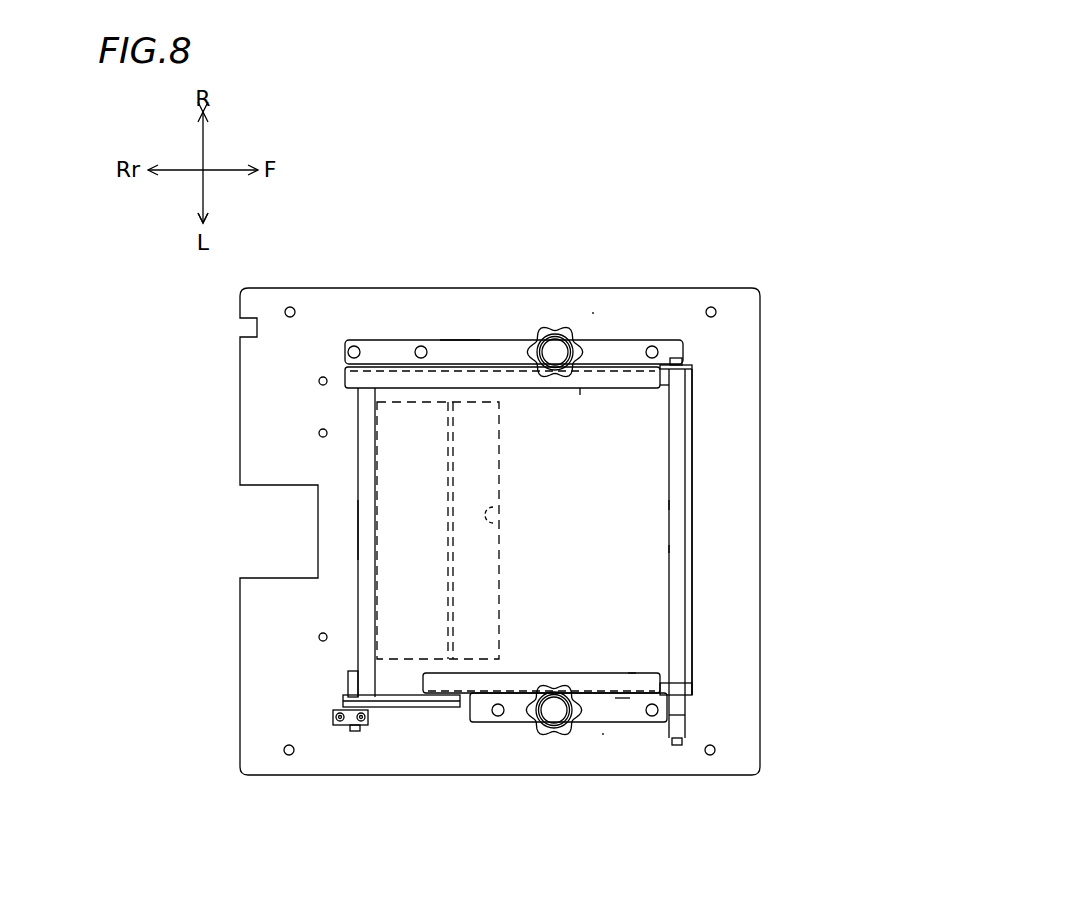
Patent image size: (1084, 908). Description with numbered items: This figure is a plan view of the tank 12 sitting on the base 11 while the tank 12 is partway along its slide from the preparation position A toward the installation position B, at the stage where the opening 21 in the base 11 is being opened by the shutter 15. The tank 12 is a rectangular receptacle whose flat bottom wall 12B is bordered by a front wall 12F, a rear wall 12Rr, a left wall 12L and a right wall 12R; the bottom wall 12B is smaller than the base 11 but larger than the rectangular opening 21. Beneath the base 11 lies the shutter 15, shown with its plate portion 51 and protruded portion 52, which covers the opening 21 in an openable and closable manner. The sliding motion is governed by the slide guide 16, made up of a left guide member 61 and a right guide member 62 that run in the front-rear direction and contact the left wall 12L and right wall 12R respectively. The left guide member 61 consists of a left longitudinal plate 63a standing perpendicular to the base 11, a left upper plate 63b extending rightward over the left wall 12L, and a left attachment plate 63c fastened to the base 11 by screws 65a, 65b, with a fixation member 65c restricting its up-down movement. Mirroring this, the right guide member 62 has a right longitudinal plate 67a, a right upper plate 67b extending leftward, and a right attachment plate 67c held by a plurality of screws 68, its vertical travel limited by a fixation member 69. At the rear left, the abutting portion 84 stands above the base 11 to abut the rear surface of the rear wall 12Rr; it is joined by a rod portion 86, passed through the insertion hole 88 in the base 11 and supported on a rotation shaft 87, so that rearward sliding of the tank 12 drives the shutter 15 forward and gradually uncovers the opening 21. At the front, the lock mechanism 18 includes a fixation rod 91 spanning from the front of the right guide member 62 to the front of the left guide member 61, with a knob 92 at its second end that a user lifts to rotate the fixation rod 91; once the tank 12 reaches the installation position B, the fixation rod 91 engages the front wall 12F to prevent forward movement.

The base 11 is at (637, 303).
The tank 12 is at (702, 527).
The bottom wall 12B is at (647, 472).
The front wall 12F is at (693, 593).
The right wall 12R is at (665, 385).
The rear wall 12Rr is at (358, 530).
The left wall 12L is at (397, 693).
The shutter 15 is at (446, 445).
The slide guide 16 is at (593, 310).
The lock mechanism 18 is at (668, 549).
The opening 21 is at (500, 520).
The plate portion 51 is at (468, 558).
The protruded portion 52 is at (448, 502).
The left guide member 61 is at (632, 666).
The right guide member 62 is at (580, 396).
The left longitudinal plate 63a is at (622, 698).
The left upper plate 63b is at (557, 672).
The left attachment plate 63c is at (583, 723).
The screw 65a is at (652, 718).
The screw 65b is at (490, 716).
The fixation member 65c is at (530, 723).
The right longitudinal plate 67a is at (515, 343).
The right upper plate 67b is at (537, 390).
The right attachment plate 67c is at (461, 340).
The screws 68 is at (354, 345).
The fixation member 69 is at (562, 326).
The abutting portion 84 is at (348, 677).
The rod portion 86 is at (343, 703).
The rotation shaft 87 is at (352, 731).
The insertion hole 88 is at (443, 707).
The fixation rod 91 is at (672, 505).
The knob 92 is at (680, 717).
The preparation position A is at (722, 350).
The installation position B is at (330, 337).